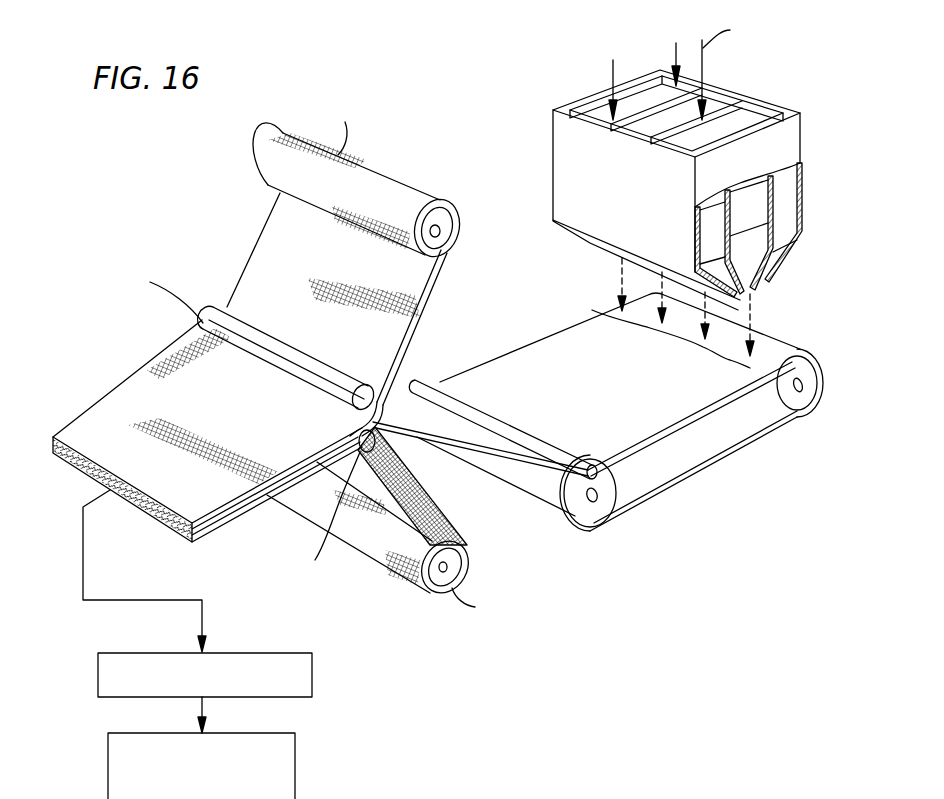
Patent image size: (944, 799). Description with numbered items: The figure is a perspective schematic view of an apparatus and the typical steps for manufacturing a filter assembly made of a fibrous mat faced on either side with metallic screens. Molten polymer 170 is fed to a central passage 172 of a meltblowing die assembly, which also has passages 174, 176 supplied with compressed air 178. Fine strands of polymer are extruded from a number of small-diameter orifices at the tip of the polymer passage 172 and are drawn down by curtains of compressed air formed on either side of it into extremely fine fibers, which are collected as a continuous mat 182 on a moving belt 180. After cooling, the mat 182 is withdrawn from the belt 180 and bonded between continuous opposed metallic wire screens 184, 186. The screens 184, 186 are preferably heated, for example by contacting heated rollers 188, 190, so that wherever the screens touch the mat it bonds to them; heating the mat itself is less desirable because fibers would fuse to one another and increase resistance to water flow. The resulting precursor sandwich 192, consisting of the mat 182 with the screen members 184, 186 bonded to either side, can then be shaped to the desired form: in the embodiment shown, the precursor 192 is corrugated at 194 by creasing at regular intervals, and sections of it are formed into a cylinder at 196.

The molten polymer 170 is at (690, 164).
The central passage 172 is at (740, 202).
The passage 174 is at (780, 195).
The passage 176 is at (708, 232).
The compressed air 178 is at (676, 43).
The moving belt 180 is at (645, 435).
The continuous mat 182 is at (478, 450).
The metallic wire screen 184 is at (280, 223).
The metallic wire screen 186 is at (453, 520).
The heated roller 188 is at (215, 302).
The heated roller 190 is at (358, 438).
The precursor sandwich 192 is at (108, 407).
The corrugating step 194 is at (312, 675).
The cylinder forming step 196 is at (297, 765).